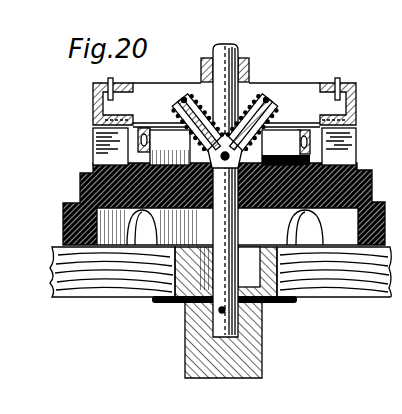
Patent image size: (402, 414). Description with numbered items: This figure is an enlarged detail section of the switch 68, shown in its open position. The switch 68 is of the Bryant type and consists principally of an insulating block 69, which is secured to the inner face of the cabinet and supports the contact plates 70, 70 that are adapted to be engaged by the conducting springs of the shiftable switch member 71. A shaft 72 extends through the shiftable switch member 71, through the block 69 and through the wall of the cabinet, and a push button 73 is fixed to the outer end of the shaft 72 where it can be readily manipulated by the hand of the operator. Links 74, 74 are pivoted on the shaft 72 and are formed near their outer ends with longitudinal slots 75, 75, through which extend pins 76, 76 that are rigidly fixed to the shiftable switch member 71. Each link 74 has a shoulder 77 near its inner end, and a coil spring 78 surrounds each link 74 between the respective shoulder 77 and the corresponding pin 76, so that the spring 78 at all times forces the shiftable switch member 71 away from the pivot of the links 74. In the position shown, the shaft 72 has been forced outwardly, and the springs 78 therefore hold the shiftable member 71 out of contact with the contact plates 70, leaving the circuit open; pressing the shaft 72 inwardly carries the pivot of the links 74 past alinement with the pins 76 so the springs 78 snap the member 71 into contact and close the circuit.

The switch 68 is at (93, 155).
The insulating block 69 is at (63, 226).
The contact plates 70 is at (93, 138).
The shiftable switch member 71 is at (352, 120).
The shaft 72 is at (240, 50).
The push button 73 is at (185, 357).
The links 74 is at (186, 96).
The longitudinal slots 75 is at (180, 106).
The pins 76 is at (180, 101).
The shoulder 77 is at (250, 152).
The coil spring 78 is at (190, 150).